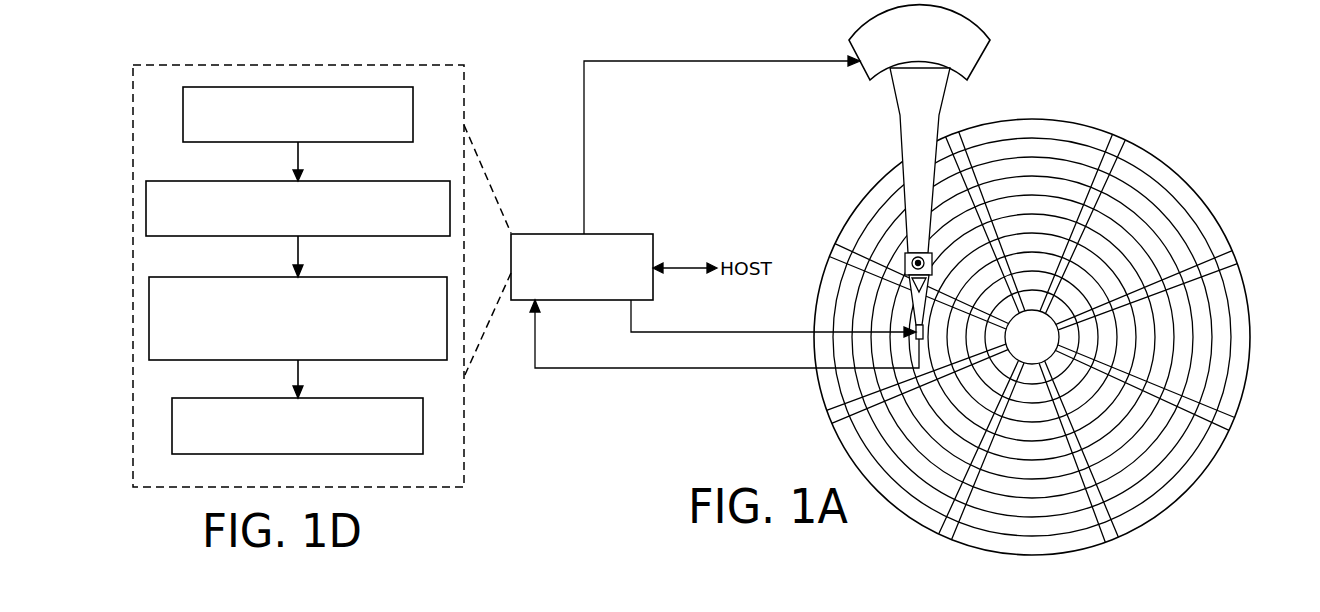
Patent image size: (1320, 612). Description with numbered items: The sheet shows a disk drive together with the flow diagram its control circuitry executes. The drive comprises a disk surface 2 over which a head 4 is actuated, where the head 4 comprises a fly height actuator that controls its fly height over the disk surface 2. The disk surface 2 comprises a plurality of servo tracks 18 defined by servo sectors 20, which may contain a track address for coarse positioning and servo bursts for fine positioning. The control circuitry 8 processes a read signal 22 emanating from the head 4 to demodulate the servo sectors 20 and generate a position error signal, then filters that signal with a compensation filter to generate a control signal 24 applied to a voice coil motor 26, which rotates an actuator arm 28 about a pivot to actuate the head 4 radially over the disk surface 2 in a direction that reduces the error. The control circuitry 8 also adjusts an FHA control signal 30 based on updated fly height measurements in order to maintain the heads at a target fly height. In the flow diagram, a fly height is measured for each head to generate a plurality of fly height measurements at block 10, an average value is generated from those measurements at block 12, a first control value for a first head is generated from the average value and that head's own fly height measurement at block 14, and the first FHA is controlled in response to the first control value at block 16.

In FIG. 1A, the disk surface 2 is at (1184, 165).
In FIG. 1A, the head 4 is at (932, 334).
In FIG. 1A, the control circuitry 8 is at (623, 234).
In FIG. 1D, the block 10 is at (388, 143).
In FIG. 1D, the block 12 is at (421, 237).
In FIG. 1D, the block 14 is at (408, 361).
In FIG. 1D, the block 16 is at (390, 455).
In FIG. 1A, the servo tracks 18 is at (1034, 146).
In FIG. 1A, the servo sectors 20 is at (1118, 140).
In FIG. 1A, the read signal 22 is at (765, 368).
In FIG. 1A, the control signal 24 is at (584, 130).
In FIG. 1A, the voice coil motor 26 is at (858, 78).
In FIG. 1A, the actuator arm 28 is at (903, 142).
In FIG. 1A, the FHA control signal 30 is at (766, 332).